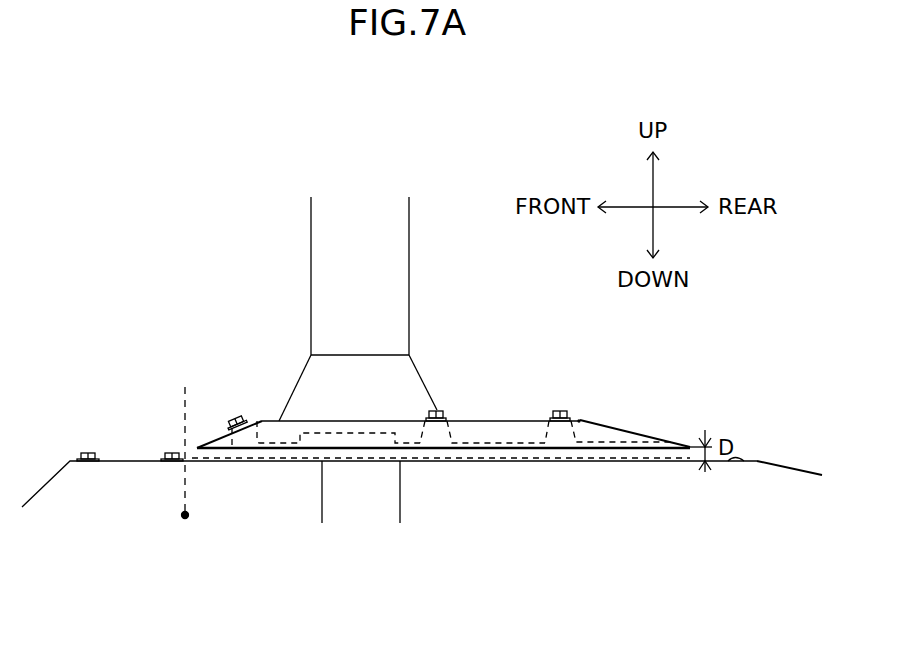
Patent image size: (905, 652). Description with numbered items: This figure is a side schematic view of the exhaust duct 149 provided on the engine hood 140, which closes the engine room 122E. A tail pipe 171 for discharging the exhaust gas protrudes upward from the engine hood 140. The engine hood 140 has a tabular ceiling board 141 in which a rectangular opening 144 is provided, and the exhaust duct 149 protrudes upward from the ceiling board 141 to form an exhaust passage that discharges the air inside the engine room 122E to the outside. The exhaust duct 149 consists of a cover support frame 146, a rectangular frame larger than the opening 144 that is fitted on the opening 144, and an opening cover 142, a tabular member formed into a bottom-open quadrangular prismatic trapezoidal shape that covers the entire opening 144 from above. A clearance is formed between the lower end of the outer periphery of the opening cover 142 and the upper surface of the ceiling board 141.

The engine hood 140 is at (144, 459).
The ceiling board 141 is at (751, 459).
The engine room 122E is at (208, 384).
The tail pipe 171 is at (410, 238).
The exhaust duct 149 is at (448, 399).
The opening cover 142 is at (607, 421).
The cover support frame 146 is at (648, 458).
The opening 144 is at (576, 456).